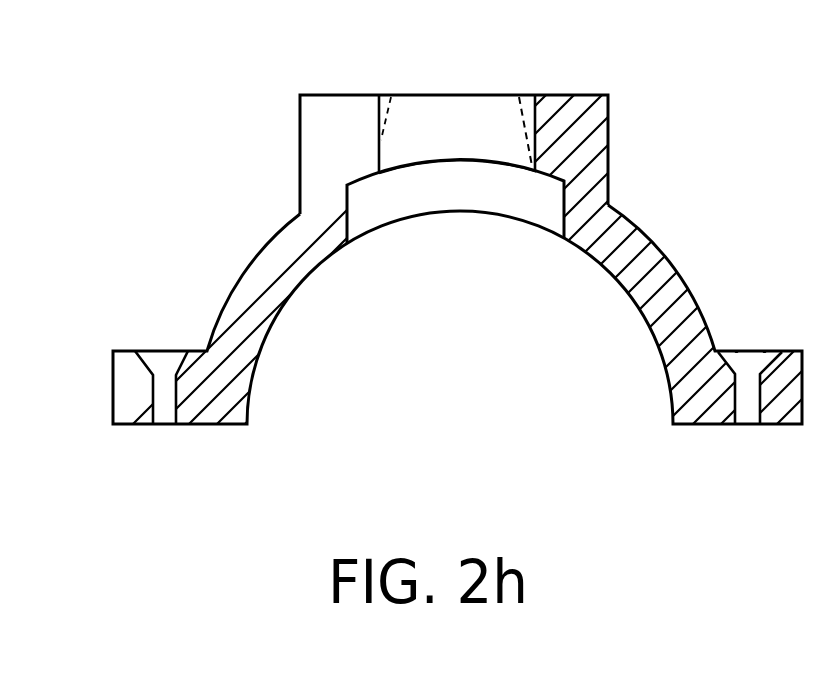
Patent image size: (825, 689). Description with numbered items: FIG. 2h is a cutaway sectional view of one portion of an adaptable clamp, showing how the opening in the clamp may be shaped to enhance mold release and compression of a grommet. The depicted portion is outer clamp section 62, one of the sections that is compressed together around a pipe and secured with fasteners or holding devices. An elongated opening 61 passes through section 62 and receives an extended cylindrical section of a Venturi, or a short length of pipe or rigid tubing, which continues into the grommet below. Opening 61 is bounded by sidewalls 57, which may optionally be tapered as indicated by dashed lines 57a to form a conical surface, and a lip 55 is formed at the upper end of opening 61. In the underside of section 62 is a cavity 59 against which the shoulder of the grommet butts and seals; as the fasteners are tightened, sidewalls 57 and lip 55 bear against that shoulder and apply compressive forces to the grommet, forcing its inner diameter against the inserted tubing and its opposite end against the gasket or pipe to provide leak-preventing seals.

The lip 55 is at (518, 95).
The sidewalls 57 is at (387, 133).
The dashed lines 57a is at (387, 125).
The cavity 59 is at (547, 212).
The elongated opening 61 is at (440, 95).
The section 62 is at (608, 140).